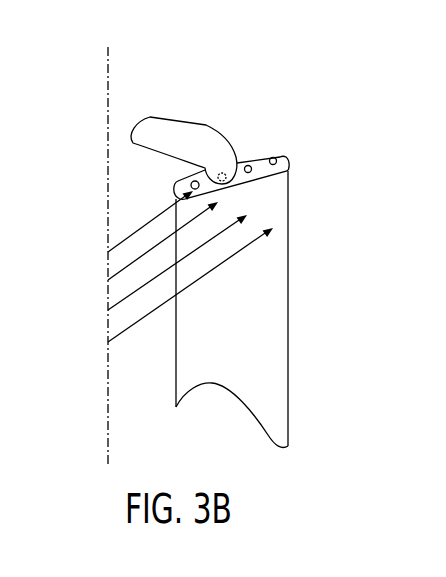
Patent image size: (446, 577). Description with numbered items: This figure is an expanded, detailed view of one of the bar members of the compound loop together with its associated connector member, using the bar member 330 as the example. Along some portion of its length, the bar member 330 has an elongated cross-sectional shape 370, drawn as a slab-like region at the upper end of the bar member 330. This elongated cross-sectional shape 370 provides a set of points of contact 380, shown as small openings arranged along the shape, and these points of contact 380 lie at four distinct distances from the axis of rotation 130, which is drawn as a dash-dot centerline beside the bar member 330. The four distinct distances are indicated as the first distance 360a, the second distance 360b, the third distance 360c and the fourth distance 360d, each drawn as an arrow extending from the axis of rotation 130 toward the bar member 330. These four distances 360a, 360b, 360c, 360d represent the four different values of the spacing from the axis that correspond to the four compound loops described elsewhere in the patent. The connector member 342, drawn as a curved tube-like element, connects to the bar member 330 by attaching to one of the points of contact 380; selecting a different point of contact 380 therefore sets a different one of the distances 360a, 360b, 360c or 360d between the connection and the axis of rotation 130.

The axis of rotation 130 is at (108, 72).
The bar member 330 is at (265, 313).
The connector member 342 is at (227, 138).
The elongated cross-sectional shape 370 is at (293, 151).
The points of contact 380 is at (191, 181).
The first distance 360a is at (118, 243).
The second distance 360b is at (127, 264).
The third distance 360c is at (118, 302).
The fourth distance 360d is at (160, 306).